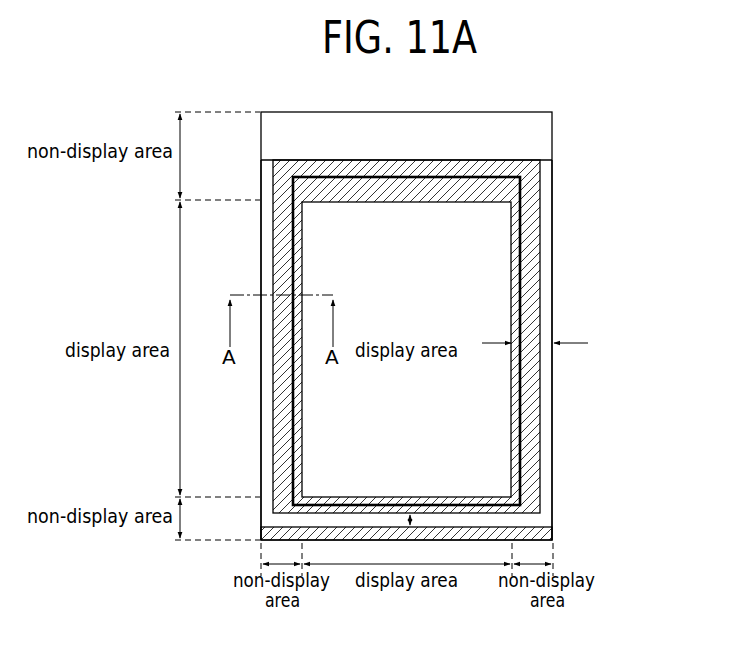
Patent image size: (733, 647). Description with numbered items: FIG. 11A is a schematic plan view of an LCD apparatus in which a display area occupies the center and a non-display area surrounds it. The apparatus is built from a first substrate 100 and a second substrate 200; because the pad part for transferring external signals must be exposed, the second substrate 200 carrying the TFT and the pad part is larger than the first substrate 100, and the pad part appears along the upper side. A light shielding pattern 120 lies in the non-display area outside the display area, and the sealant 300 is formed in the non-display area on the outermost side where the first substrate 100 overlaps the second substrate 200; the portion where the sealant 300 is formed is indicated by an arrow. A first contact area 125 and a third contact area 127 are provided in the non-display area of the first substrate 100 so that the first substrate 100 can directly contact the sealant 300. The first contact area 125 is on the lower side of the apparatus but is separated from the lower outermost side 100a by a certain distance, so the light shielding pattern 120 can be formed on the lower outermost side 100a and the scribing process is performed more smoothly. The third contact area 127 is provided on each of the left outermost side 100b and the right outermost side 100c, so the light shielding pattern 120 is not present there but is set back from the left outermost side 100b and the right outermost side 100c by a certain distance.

The first substrate 100 is at (553, 190).
The second substrate 200 is at (553, 137).
The sealant 300 is at (530, 345).
The third contact area 127 is at (550, 299).
The light shielding pattern 120 is at (532, 253).
The right outermost side 100c is at (553, 425).
The left outermost side 100b is at (261, 472).
The lower outermost side 100a is at (540, 538).
The first contact area 125 is at (472, 524).